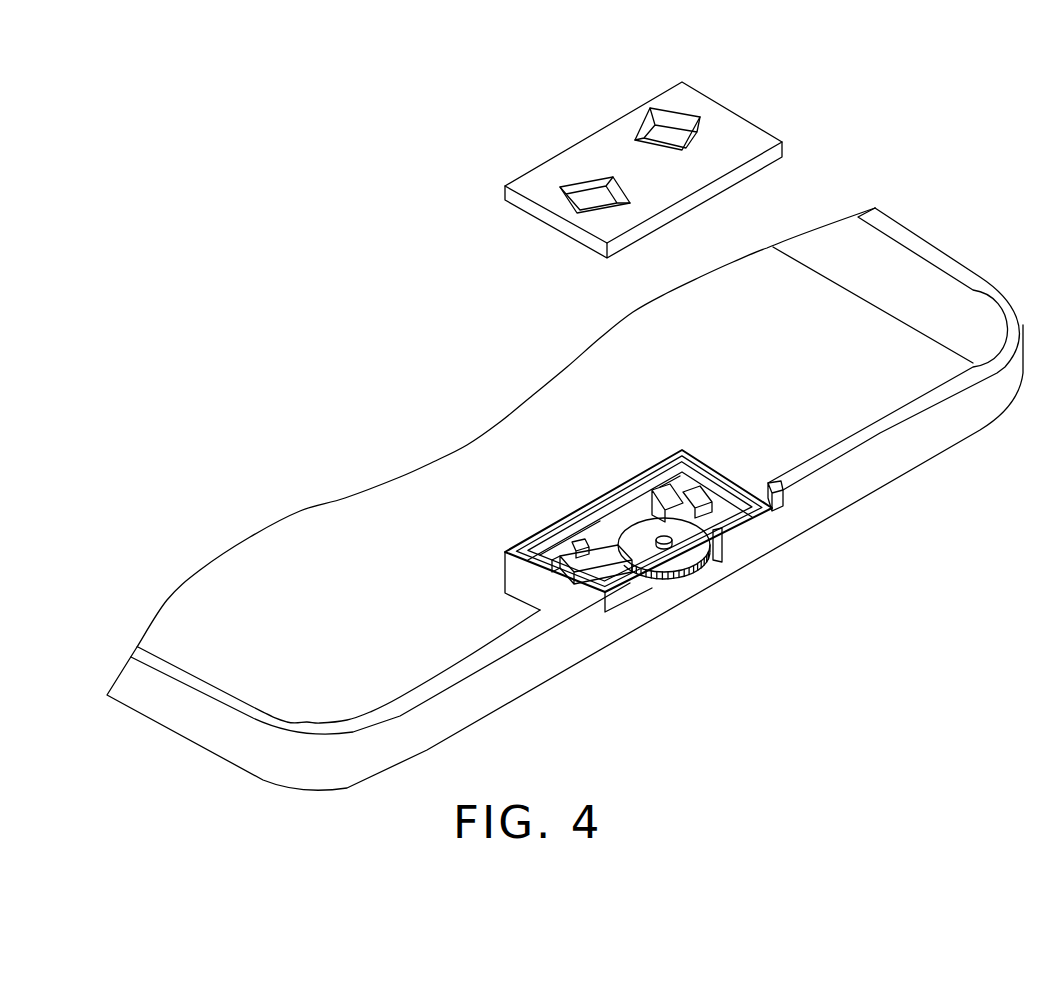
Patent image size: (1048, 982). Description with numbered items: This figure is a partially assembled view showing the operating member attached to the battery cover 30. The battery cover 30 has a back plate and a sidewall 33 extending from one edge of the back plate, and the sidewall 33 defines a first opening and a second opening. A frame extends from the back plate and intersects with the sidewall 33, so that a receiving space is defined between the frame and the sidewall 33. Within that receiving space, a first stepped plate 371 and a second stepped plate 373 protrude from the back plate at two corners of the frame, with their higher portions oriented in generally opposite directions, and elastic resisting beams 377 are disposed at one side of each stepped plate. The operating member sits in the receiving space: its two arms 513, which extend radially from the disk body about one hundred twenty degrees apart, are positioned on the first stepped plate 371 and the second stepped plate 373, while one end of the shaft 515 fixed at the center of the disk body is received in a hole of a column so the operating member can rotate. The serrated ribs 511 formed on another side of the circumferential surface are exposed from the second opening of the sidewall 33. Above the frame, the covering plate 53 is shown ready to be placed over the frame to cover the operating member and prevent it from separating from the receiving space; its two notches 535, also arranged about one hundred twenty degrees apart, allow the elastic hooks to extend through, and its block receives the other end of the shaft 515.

The battery cover 30 is at (843, 330).
The sidewall 33 is at (928, 428).
The covering plate 53 is at (733, 132).
The notches 535 is at (588, 203).
The first stepped plate 371 is at (673, 490).
The second stepped plate 373 is at (540, 552).
The resisting beams 377 is at (572, 545).
The serrated ribs 511 is at (673, 548).
The arms 513 is at (687, 518).
The shaft 515 is at (665, 548).